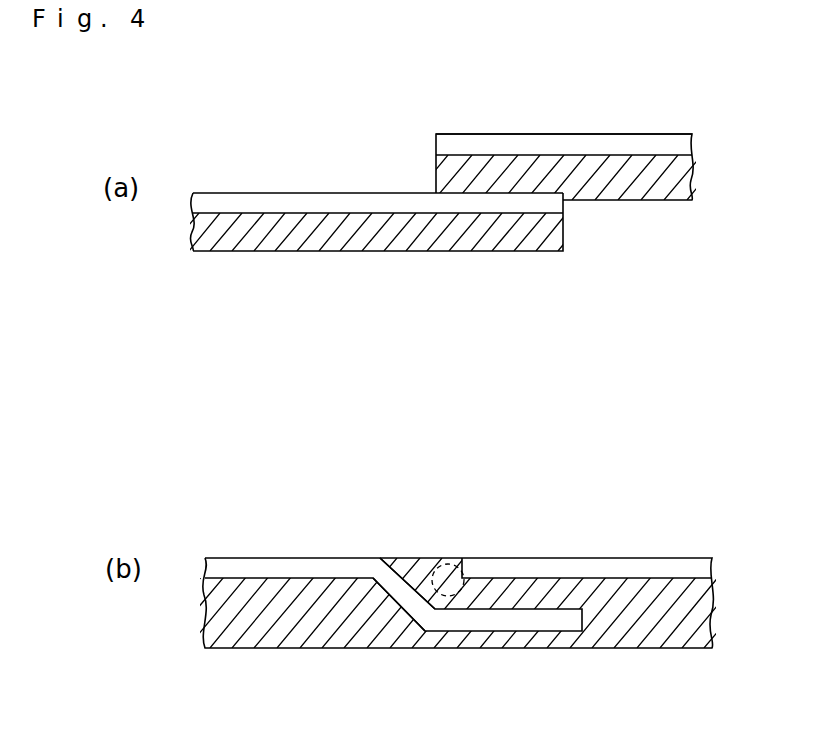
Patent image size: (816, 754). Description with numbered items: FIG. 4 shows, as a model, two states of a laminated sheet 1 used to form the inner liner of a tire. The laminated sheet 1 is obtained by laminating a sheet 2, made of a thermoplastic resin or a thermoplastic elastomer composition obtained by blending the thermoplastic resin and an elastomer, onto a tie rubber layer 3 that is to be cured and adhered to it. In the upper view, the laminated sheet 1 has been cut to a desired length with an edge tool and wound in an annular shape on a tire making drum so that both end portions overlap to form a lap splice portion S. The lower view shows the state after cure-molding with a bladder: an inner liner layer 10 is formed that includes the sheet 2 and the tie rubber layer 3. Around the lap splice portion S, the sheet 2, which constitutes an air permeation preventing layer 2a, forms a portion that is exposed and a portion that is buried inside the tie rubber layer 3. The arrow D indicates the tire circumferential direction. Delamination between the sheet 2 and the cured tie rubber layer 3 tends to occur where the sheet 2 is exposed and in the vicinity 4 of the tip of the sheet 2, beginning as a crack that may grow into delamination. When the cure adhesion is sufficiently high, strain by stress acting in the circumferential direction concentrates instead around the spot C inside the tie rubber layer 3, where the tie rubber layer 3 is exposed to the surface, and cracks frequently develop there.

The laminated sheet 1 is at (308, 193).
The sheet 2 is at (253, 203).
The air permeation preventing layer 2a is at (587, 568).
The tie rubber layer 3 is at (288, 243).
The vicinity of the tip of the sheet 4 is at (472, 548).
The inner liner layer 10 is at (738, 553).
The lap splice portion S is at (563, 118).
The spot inside the tie rubber layer C is at (446, 598).
The arrow indicating the tire circumferential direction D is at (390, 439).